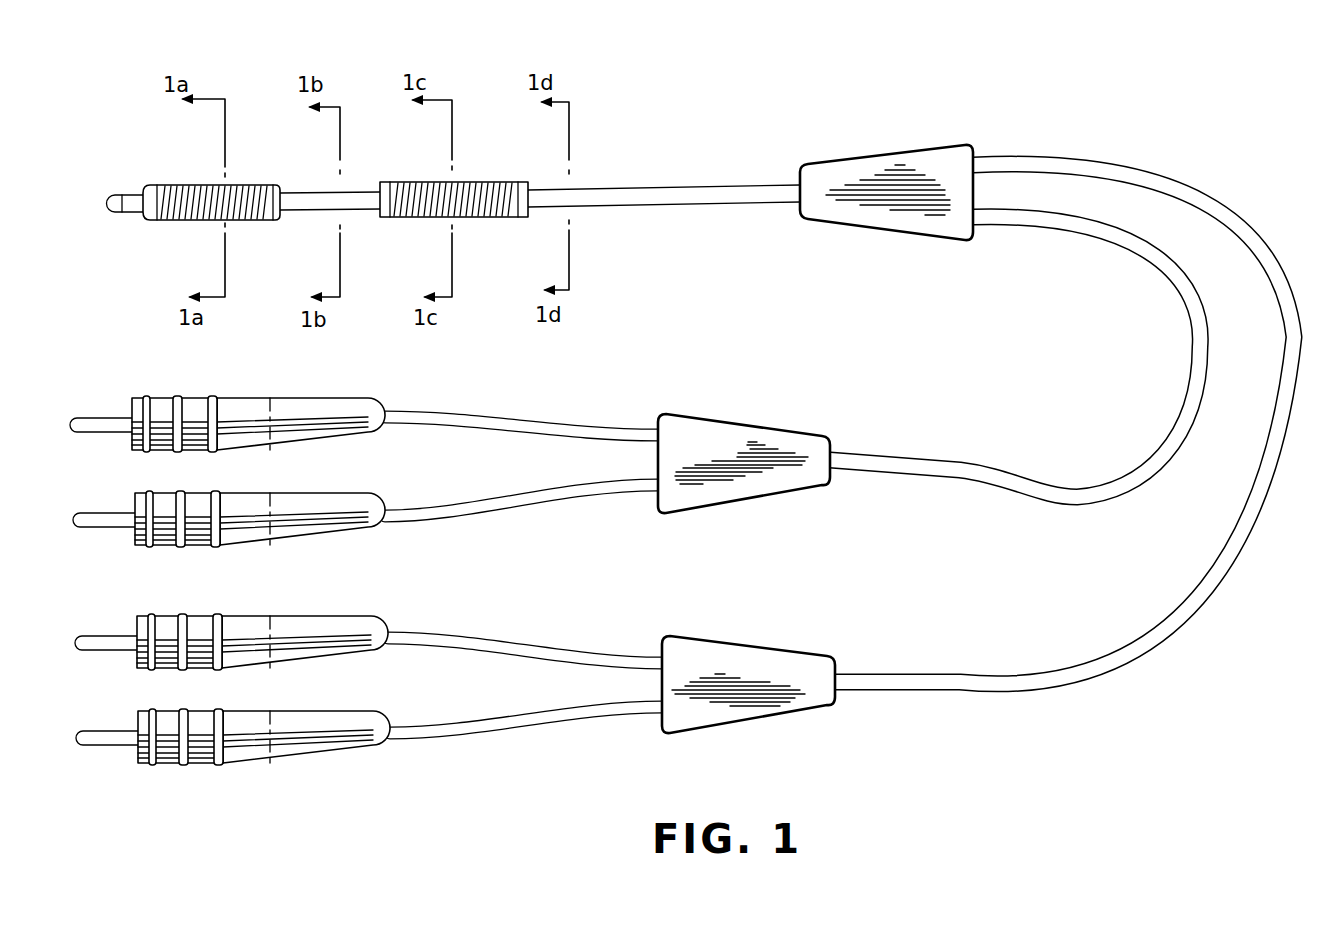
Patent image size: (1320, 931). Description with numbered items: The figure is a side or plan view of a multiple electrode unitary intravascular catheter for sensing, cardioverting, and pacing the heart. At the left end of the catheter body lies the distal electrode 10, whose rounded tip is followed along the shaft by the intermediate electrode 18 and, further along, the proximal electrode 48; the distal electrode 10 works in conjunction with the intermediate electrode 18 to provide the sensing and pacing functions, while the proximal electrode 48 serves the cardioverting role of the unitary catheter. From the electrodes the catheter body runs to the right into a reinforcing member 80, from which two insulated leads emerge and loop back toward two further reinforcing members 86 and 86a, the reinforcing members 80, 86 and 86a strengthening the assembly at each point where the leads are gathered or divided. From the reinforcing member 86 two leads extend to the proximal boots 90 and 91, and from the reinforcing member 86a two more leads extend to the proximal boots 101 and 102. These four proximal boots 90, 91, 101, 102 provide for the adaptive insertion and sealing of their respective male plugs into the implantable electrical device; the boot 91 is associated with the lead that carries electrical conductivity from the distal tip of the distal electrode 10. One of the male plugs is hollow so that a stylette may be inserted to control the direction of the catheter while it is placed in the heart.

The distal electrode 10 is at (117, 190).
The intermediate electrode 18 is at (242, 187).
The proximal electrode 48 is at (482, 184).
The reinforcing member 80 is at (903, 218).
The reinforcing member 86 is at (773, 435).
The reinforcing member 86a is at (762, 660).
The proximal boot 90 is at (302, 403).
The proximal boot 91 is at (323, 522).
The proximal boot 101 is at (357, 625).
The proximal boot 102 is at (325, 732).